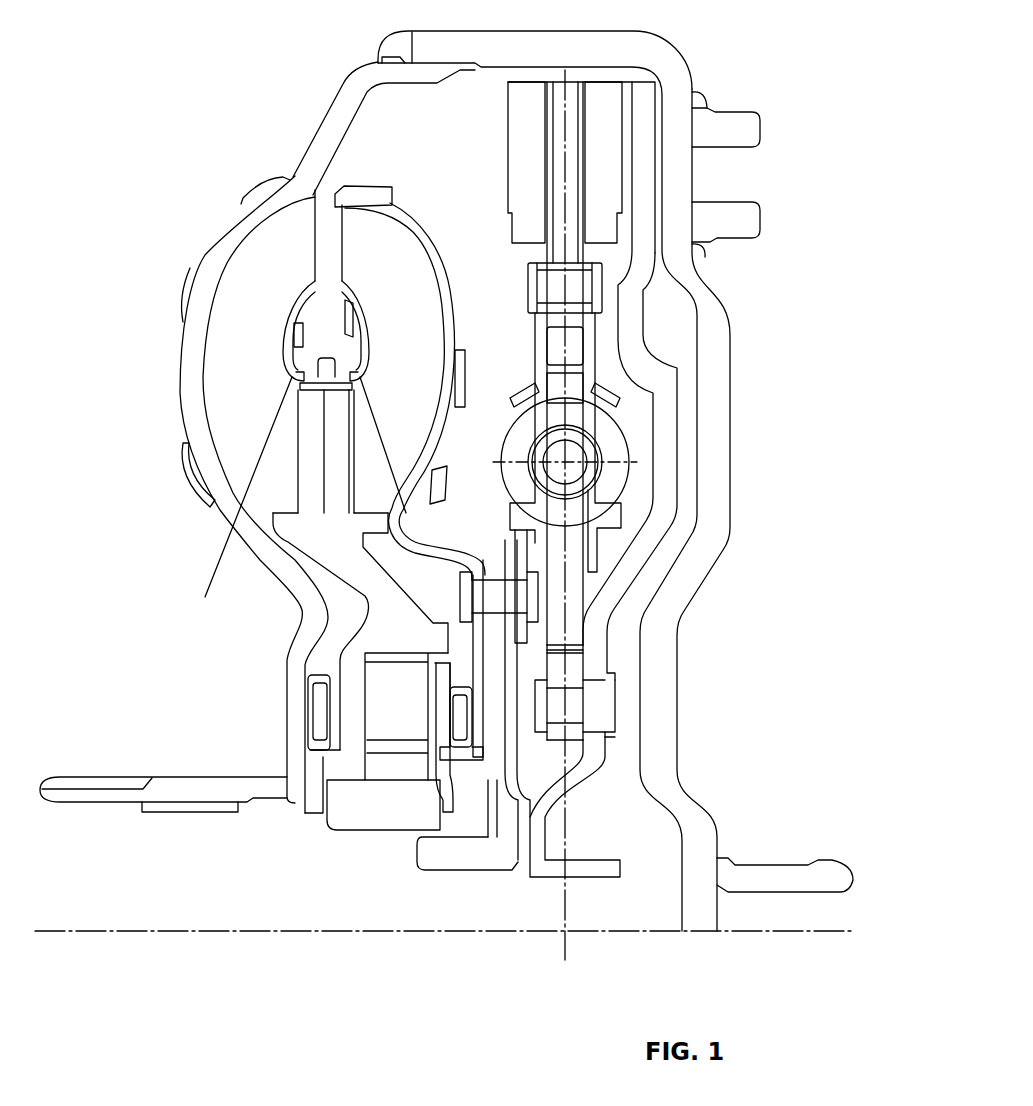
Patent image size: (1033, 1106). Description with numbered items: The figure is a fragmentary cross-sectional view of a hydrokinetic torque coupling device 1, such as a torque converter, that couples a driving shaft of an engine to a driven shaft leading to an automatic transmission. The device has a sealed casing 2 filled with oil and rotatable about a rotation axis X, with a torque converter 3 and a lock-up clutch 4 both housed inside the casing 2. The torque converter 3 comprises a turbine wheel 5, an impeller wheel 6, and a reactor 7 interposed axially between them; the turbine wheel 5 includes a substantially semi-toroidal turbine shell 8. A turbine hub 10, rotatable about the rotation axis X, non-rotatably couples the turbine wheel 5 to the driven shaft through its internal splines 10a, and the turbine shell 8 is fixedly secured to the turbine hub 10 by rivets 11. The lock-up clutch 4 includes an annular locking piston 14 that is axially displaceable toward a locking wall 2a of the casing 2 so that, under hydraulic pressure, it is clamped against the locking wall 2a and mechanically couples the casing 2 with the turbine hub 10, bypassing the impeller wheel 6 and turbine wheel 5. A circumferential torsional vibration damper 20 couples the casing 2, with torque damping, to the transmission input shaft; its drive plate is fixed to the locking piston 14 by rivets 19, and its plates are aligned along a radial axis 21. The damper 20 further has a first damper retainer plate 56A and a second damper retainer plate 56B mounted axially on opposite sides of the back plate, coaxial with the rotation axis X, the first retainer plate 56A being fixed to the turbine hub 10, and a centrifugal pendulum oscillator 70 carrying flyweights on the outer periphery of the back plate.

The hydrokinetic torque coupling device 1 is at (290, 100).
The sealed casing 2 is at (733, 530).
The locking wall 2a is at (730, 322).
The torque converter 3 is at (431, 229).
The lock-up clutch 4 is at (660, 297).
The turbine wheel 5 is at (464, 339).
The impeller wheel 6 is at (178, 374).
The reactor 7 is at (303, 462).
The turbine shell 8 is at (435, 275).
The turbine hub 10 is at (493, 757).
The internal splines 10a is at (458, 873).
The rivets 11 is at (495, 596).
The locking piston 14 is at (650, 547).
The rivets 19 is at (598, 707).
The torsional vibration damper 20 is at (630, 422).
The radial axis 21 is at (567, 938).
The first damper retainer plate 56A is at (537, 337).
The second damper retainer plate 56B is at (595, 350).
The centrifugal pendulum oscillator 70 is at (504, 136).
The rotation axis X is at (205, 933).